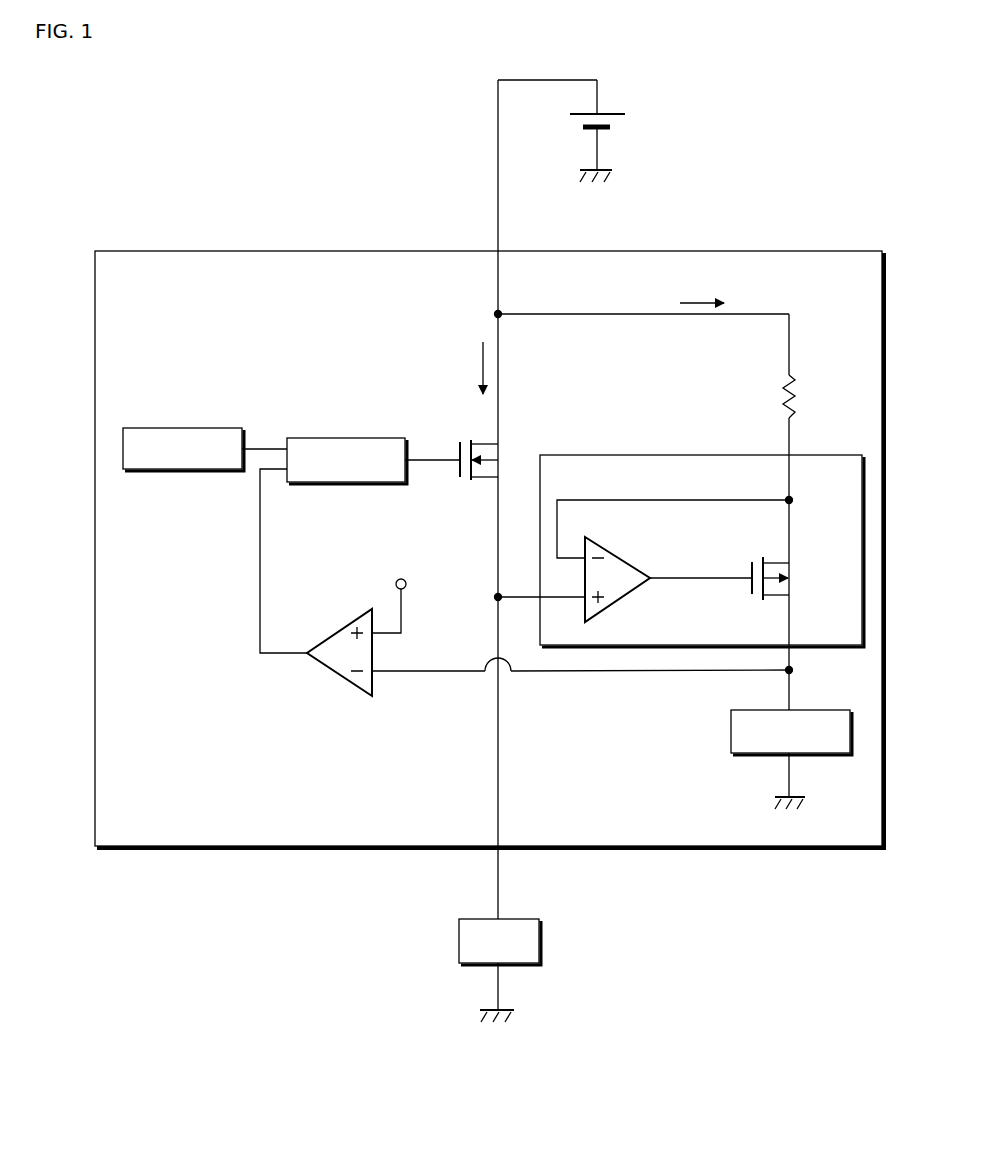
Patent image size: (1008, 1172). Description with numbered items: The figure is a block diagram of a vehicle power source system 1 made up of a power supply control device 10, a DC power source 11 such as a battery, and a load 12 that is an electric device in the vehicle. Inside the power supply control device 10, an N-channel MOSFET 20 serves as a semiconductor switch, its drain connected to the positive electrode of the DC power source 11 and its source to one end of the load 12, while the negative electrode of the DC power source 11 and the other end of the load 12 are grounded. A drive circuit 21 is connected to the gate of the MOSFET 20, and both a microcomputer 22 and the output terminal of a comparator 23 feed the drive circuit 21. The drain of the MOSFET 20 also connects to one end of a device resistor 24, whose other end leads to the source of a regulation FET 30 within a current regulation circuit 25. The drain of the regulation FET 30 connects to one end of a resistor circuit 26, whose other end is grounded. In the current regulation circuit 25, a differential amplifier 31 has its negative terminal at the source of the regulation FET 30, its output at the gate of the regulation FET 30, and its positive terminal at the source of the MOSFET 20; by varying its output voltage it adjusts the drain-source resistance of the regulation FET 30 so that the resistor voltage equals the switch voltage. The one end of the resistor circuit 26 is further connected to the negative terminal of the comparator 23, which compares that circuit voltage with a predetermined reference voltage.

The power source system 1 is at (775, 119).
The power supply control device 10 is at (152, 251).
The DC power source 11 is at (610, 105).
The load 12 is at (525, 918).
The MOSFET 20 is at (478, 487).
The drive circuit 21 is at (363, 437).
The microcomputer 22 is at (208, 427).
The comparator 23 is at (340, 623).
The device resistor 24 is at (803, 398).
The current regulation circuit 25 is at (565, 455).
The resistor circuit 26 is at (823, 710).
The regulation FET 30 is at (822, 565).
The differential amplifier 31 is at (648, 548).